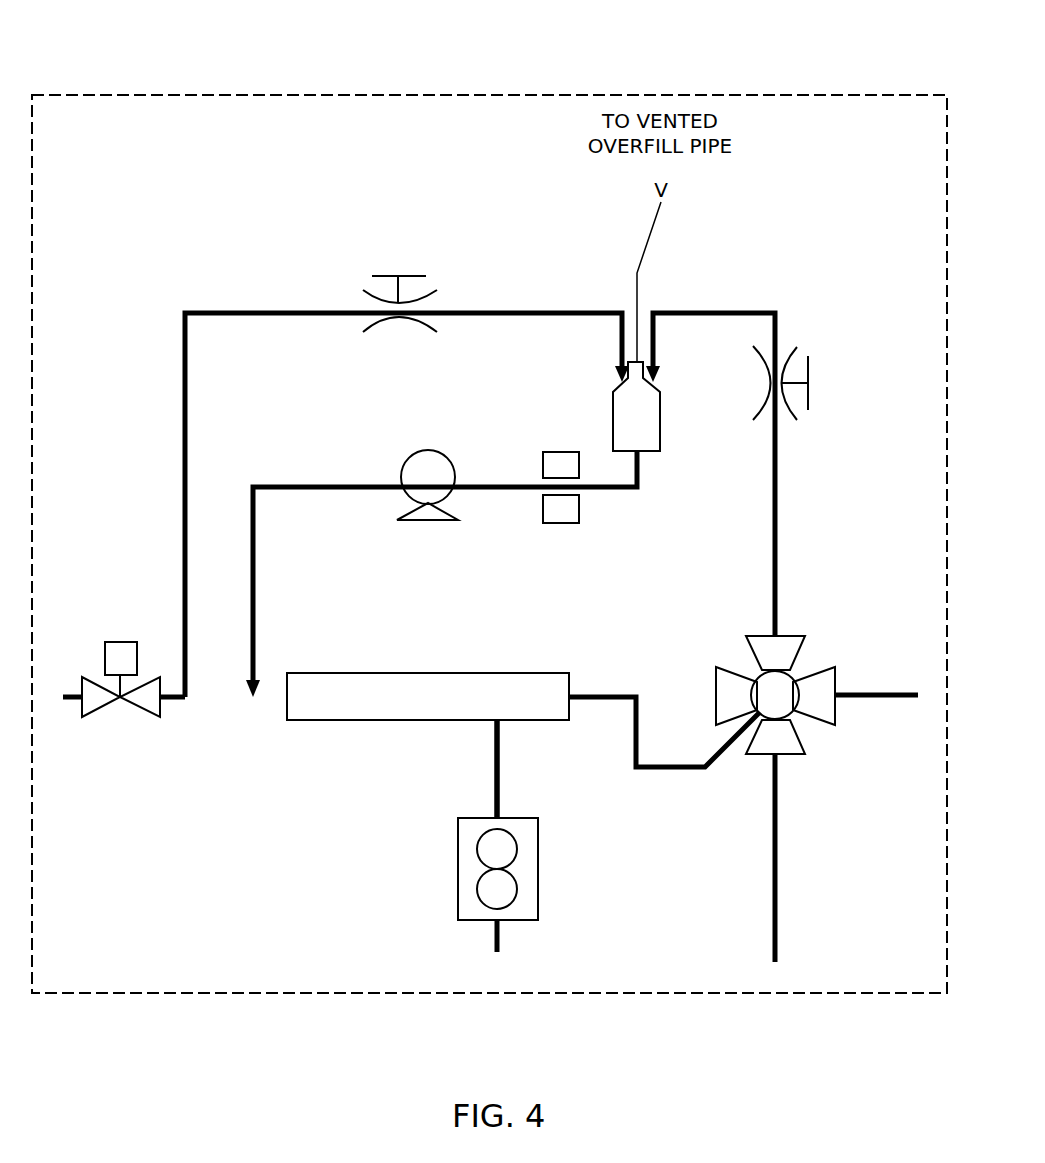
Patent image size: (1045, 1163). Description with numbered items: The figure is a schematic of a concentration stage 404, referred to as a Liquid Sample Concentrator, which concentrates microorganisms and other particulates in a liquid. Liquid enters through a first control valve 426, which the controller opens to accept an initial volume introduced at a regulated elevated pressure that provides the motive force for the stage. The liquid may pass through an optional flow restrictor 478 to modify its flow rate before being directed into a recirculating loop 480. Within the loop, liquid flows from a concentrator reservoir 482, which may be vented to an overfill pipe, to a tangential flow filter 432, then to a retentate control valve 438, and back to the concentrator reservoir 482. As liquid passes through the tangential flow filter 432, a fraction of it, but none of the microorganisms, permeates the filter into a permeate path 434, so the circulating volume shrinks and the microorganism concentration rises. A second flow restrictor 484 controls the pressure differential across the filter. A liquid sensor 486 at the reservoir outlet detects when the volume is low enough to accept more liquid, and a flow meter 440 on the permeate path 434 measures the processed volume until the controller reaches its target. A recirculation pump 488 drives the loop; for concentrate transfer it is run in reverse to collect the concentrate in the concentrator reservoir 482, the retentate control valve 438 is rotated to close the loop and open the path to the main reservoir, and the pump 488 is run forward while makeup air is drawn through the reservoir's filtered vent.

The concentration stage 404 is at (208, 65).
The first control valve 426 is at (97, 708).
The tangential flow filter 432 is at (350, 721).
The permeate path 434 is at (495, 779).
The retentate control valve 438 is at (800, 742).
The flow meter 440 is at (458, 876).
The flow restrictor 478 is at (375, 323).
The recirculating loop 480 is at (300, 490).
The concentrator reservoir 482 is at (652, 453).
The second flow restrictor 484 is at (758, 412).
The liquid sensor 486 is at (563, 450).
The recirculation pump 488 is at (423, 523).